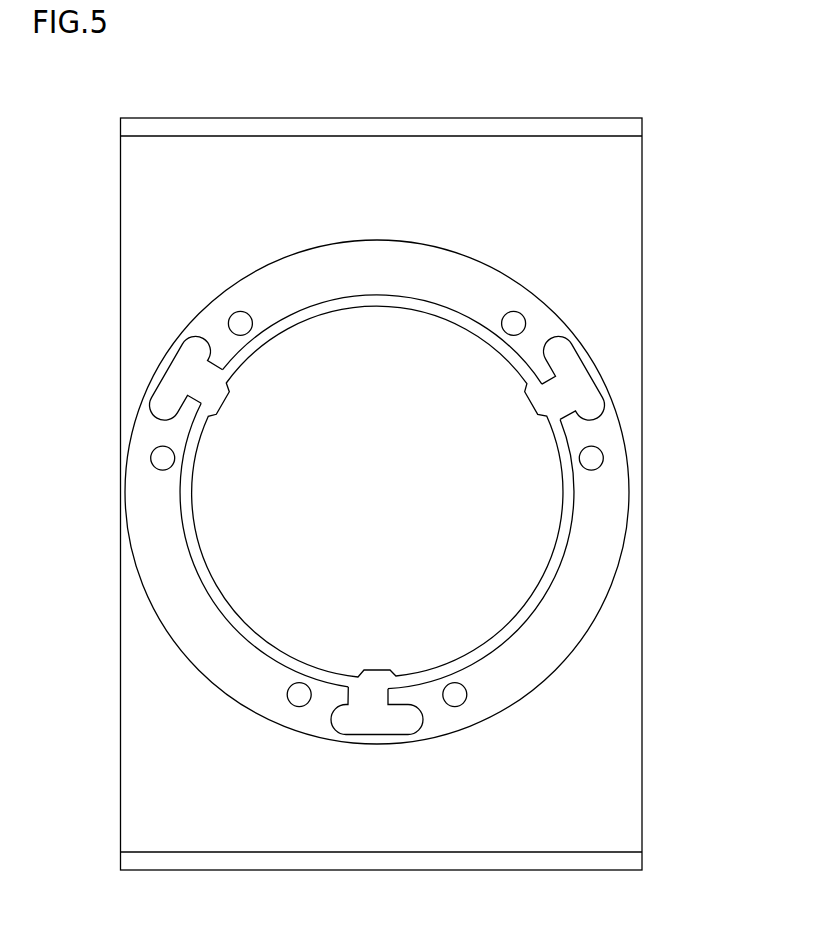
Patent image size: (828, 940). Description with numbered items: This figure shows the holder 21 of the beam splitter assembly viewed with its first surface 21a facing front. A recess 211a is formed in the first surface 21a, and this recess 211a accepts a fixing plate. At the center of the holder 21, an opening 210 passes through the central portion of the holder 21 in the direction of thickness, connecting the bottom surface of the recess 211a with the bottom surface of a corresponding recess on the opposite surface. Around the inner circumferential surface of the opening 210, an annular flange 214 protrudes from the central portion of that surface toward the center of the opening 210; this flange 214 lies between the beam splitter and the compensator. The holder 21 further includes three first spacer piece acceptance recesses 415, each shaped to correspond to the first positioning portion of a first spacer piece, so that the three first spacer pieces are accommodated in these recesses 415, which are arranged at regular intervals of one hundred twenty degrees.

The holder 21 is at (541, 98).
The first surface 21a is at (618, 808).
The opening 210 is at (573, 520).
The recess 211a is at (605, 600).
The flange 214 is at (245, 628).
The first spacer piece acceptance recess 415 is at (179, 383).